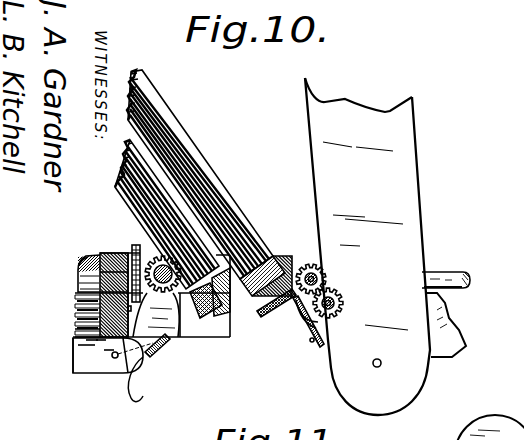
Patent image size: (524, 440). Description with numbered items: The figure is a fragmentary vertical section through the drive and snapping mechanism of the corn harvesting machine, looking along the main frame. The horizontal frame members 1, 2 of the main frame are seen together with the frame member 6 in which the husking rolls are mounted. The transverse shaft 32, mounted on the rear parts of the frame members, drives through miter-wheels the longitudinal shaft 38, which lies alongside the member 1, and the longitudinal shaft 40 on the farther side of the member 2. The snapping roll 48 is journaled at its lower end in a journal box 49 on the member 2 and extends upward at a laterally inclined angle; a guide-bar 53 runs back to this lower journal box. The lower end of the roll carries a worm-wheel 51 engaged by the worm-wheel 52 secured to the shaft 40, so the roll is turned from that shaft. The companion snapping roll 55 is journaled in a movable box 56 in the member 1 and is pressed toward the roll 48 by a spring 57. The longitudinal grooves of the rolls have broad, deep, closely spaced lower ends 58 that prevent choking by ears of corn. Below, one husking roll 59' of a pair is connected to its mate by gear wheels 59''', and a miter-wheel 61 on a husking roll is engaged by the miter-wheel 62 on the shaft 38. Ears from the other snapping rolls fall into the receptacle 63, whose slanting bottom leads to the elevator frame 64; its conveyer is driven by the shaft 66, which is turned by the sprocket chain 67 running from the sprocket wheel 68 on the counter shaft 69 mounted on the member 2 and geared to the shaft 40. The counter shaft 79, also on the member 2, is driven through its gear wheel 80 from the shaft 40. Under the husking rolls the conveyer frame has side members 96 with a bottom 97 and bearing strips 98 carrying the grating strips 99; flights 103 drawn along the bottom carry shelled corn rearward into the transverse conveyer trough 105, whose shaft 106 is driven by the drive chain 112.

The horizontal frame member 1 is at (218, 338).
The horizontal frame member 2 is at (287, 256).
The frame member 6 is at (114, 253).
The transverse shaft 32 is at (447, 274).
The longitudinal shaft 38 is at (137, 247).
The longitudinal shaft 40 is at (320, 288).
The snapping roll 48 is at (208, 158).
The journal box 49 is at (247, 302).
The worm-wheel 51 is at (272, 314).
The worm-wheel 52 is at (315, 266).
The guide-bar 53 is at (232, 330).
The snapping roll 55 is at (119, 178).
The movable box 56 is at (200, 338).
The spring 57 is at (186, 338).
The lower groove ends 58 is at (121, 162).
The husking roll 59' is at (89, 254).
The gear wheel 59''' is at (59, 260).
The miter-wheel 61 is at (114, 358).
The miter-wheel 62 is at (128, 362).
The receptacle 63 is at (455, 342).
The elevator frame 64 is at (407, 174).
The shaft 66 is at (382, 364).
The sprocket chain 67 is at (312, 344).
The sprocket wheel 68 is at (324, 331).
The counter shaft 69 is at (303, 331).
The counter shaft 79 is at (348, 305).
The gear wheel 80 is at (335, 297).
The conveyer frame side member 96 is at (101, 340).
The bottom 97 is at (84, 349).
The bearing strip 98 is at (93, 340).
The grating strip 99 is at (78, 308).
The flight 103 is at (82, 331).
The conveyer trough 105 is at (76, 351).
The rotative shaft 106 is at (109, 350).
The drive chain 112 is at (131, 400).